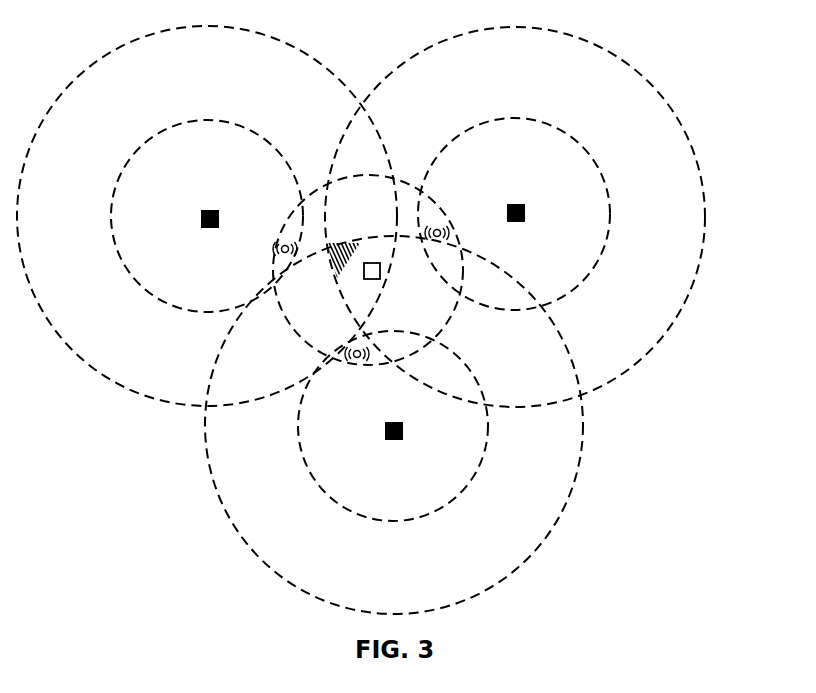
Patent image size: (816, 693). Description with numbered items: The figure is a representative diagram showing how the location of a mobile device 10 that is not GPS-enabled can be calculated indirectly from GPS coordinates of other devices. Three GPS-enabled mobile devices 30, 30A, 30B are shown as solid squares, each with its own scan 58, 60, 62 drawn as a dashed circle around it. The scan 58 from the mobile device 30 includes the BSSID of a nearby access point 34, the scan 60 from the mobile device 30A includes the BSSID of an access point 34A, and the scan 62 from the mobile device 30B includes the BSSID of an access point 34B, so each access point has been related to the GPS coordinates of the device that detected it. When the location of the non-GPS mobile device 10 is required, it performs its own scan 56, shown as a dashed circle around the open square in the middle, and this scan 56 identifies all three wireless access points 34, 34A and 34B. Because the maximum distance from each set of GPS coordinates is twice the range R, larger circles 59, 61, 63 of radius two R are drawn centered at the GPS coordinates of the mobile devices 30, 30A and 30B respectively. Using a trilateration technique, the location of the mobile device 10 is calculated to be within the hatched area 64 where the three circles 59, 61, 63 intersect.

The mobile device 10 is at (380, 278).
The GPS-enabled mobile device 30 is at (214, 205).
The GPS-enabled mobile device 30A is at (523, 202).
The GPS-enabled mobile device 30B is at (398, 442).
The access point 34 is at (276, 254).
The access point 34A is at (454, 237).
The access point 34B is at (370, 360).
The scan 56 is at (384, 270).
The scan 58 is at (227, 120).
The circle 59 is at (328, 68).
The scan 60 is at (598, 162).
The circle 61 is at (648, 77).
The scan 62 is at (488, 443).
The circle 63 is at (580, 475).
The area 64 is at (345, 243).